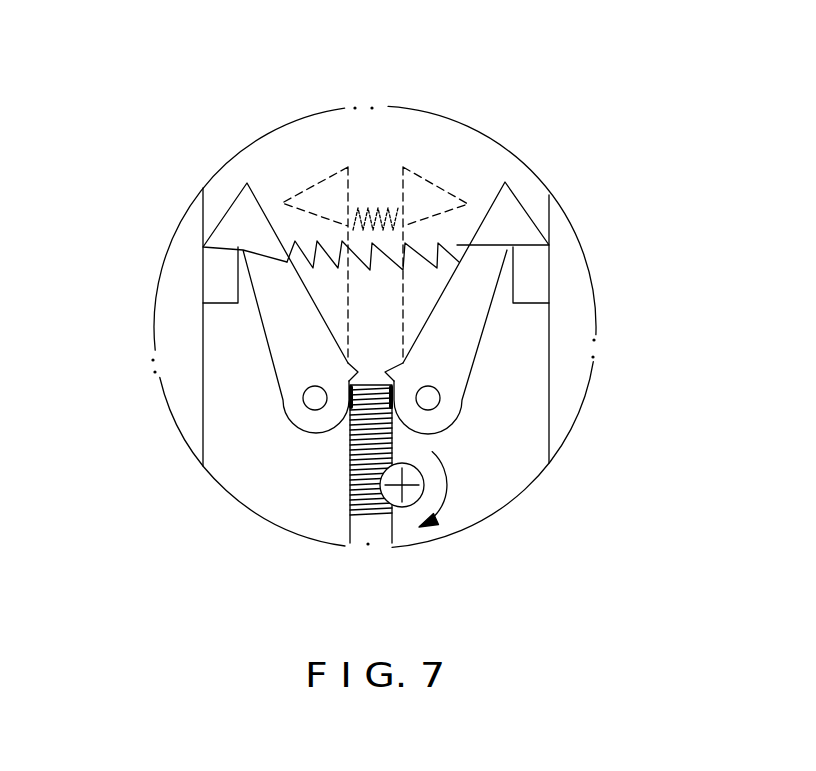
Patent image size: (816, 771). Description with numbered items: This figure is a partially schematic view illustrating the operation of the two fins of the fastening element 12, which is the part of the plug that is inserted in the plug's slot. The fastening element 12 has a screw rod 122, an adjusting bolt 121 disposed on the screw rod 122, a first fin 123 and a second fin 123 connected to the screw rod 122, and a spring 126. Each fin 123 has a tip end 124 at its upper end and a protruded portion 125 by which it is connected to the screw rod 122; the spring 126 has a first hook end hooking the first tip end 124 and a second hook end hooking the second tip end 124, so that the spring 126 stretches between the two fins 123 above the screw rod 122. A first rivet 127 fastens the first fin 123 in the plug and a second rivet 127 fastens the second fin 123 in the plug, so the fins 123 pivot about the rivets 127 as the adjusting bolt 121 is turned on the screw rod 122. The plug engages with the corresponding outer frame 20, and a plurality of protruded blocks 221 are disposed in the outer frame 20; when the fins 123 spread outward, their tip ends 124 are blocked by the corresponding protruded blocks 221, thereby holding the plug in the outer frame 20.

The fastening element 12 is at (389, 160).
The outer frame 20 is at (203, 237).
The adjusting bolt 121 is at (403, 508).
The screw rod 122 is at (352, 523).
The fin 123 is at (268, 313).
The tip end 124 is at (524, 225).
The protruded portion 125 is at (385, 370).
The spring 126 is at (372, 271).
The rivet 127 is at (431, 403).
The protruded block 221 is at (538, 273).